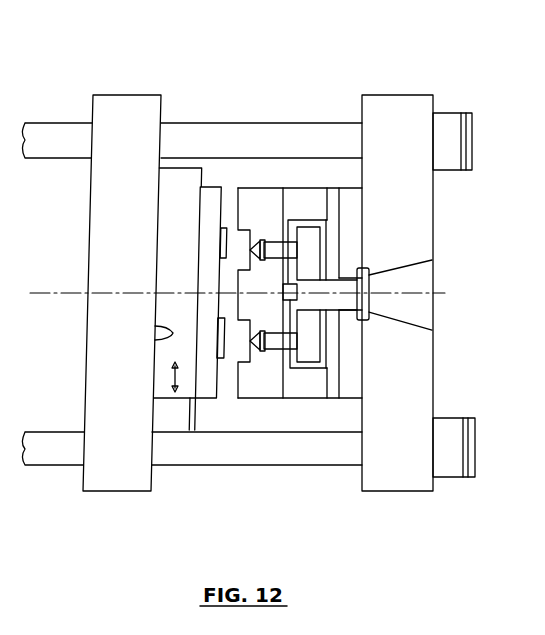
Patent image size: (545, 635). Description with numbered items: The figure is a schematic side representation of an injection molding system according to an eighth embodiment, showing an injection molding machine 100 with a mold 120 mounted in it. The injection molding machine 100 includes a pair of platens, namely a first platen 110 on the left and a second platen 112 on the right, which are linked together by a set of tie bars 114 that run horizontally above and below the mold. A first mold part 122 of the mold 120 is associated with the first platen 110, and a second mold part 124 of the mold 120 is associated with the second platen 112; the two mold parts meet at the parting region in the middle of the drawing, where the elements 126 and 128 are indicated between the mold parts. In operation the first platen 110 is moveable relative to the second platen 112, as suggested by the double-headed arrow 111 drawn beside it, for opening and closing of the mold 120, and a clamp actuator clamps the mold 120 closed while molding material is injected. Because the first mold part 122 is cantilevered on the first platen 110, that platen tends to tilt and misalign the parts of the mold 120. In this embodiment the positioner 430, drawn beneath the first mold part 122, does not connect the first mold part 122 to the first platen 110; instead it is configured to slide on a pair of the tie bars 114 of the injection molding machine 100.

The injection molding machine 100 is at (248, 322).
The first platen 110 is at (128, 108).
The platen movement direction 111 is at (157, 340).
The second platen 112 is at (383, 130).
The tie bars 114 is at (277, 447).
The mold 120 is at (256, 280).
The first mold part 122 is at (189, 297).
The second mold part 124 is at (290, 283).
The mold core 126 is at (214, 244).
The mold cavity plate 128 is at (237, 242).
The positioner 430 is at (183, 420).